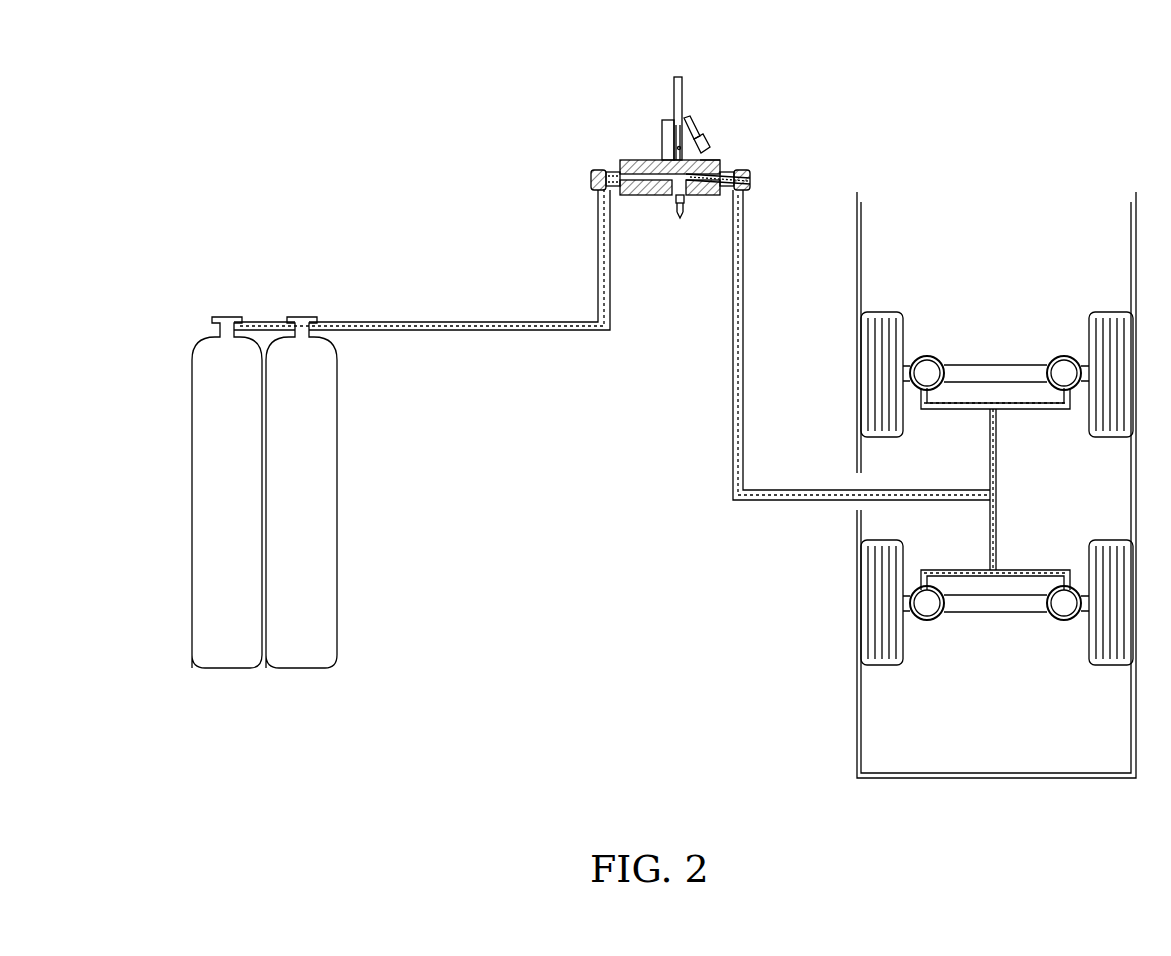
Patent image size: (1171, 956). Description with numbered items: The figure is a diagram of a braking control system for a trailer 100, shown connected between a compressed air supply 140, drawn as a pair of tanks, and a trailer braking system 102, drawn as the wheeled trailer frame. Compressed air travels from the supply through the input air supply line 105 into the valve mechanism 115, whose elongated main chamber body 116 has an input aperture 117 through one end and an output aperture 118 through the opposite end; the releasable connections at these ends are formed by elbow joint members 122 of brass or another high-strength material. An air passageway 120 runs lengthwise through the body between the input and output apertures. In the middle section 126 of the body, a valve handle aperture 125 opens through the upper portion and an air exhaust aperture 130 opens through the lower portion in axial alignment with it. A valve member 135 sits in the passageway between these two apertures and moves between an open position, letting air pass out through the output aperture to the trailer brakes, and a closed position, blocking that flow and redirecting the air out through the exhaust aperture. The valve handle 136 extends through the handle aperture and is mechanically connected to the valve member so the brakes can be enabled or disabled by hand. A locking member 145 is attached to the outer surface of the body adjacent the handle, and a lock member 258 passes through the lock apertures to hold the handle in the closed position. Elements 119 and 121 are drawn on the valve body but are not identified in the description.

The braking control system for a trailer 100 is at (892, 108).
The trailer braking system 102 is at (915, 128).
The input air supply line 105 is at (610, 268).
The valve mechanism 115 is at (634, 160).
The elongated main chamber body 116 is at (614, 172).
The input aperture 117 is at (608, 172).
The output aperture 118 is at (734, 174).
The valve body portion 119 is at (704, 160).
The air passageway 120 is at (636, 188).
The lower valve body portion 121 is at (655, 186).
The elbow joint members 122 is at (591, 178).
The valve handle aperture 125 is at (688, 117).
The middle section 126 is at (690, 177).
The air exhaust aperture 130 is at (684, 200).
The valve member 135 is at (680, 212).
The valve handle 136 is at (680, 77).
The compressed air supply 140 is at (245, 477).
The locking member 145 is at (662, 120).
The lock member 258 is at (702, 135).